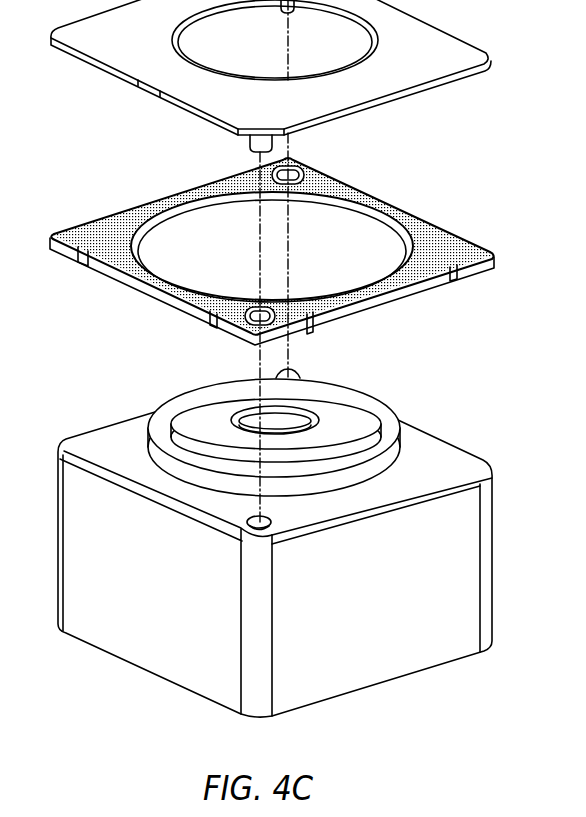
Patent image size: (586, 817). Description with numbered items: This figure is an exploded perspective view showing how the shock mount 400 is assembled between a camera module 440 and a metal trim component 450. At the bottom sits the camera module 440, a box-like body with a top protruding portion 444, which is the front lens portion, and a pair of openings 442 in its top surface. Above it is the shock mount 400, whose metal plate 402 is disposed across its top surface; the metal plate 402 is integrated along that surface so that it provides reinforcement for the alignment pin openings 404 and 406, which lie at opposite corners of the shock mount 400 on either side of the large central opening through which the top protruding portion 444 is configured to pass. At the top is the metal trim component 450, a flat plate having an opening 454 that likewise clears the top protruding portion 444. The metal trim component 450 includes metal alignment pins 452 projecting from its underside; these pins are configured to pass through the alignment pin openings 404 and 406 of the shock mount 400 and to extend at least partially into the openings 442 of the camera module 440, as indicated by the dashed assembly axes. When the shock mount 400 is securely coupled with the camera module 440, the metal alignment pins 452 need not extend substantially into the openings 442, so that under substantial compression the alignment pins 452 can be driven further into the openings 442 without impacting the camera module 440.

The shock mount 400 is at (258, 358).
The metal plate 402 is at (272, 246).
The alignment pin opening 404 is at (303, 171).
The alignment pin opening 406 is at (280, 327).
The camera module 440 is at (429, 580).
The openings 442 is at (272, 378).
The top protruding portion 444 is at (163, 395).
The metal trim component 450 is at (271, 67).
The metal alignment pins 452 is at (286, 14).
The opening 454 is at (340, 58).